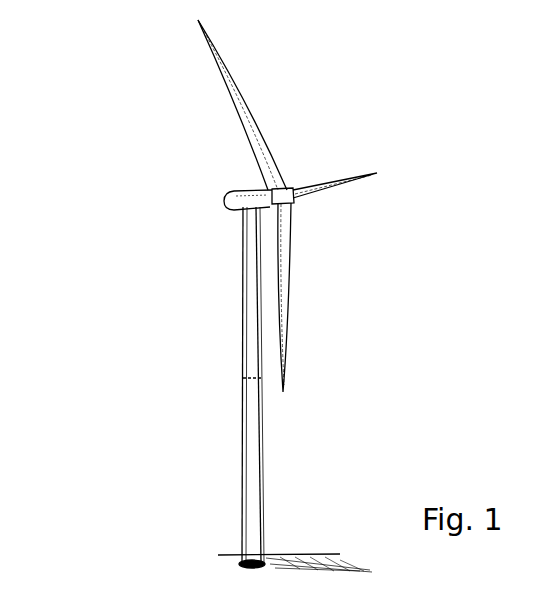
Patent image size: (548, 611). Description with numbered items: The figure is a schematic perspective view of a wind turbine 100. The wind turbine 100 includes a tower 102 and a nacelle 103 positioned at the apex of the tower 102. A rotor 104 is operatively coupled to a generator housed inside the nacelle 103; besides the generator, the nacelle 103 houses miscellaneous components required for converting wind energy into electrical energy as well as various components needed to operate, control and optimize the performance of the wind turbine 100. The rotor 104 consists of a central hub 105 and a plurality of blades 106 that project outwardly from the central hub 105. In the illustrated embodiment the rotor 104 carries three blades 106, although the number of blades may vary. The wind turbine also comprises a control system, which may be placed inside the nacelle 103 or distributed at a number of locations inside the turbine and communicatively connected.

The wind turbine 100 is at (108, 153).
The tower 102 is at (247, 323).
The nacelle 103 is at (240, 193).
The rotor 104 is at (362, 268).
The central hub 105 is at (286, 187).
The blades 106 is at (245, 109).